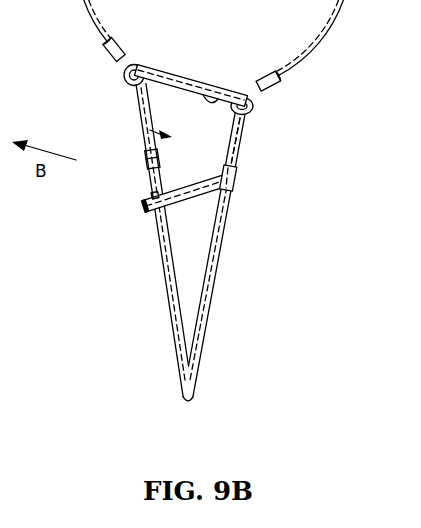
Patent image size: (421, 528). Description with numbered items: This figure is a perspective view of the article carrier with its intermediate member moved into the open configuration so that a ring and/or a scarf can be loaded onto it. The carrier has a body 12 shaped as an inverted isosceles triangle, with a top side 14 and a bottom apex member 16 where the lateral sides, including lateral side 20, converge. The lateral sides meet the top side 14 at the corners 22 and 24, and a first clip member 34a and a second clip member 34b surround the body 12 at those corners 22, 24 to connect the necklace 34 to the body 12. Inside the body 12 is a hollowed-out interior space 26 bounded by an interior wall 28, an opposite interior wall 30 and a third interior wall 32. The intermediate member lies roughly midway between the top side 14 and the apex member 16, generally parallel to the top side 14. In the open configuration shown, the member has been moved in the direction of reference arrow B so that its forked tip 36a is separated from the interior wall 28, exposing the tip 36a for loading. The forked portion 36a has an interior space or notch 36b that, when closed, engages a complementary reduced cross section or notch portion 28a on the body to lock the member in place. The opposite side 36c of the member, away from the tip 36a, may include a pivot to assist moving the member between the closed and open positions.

The body 12 is at (238, 200).
The top side 14 is at (197, 78).
The bottom apex member 16 is at (186, 392).
The lateral side 20 is at (212, 298).
The corner 22 is at (145, 62).
The corner 24 is at (260, 108).
The interior space 26 is at (146, 127).
The interior wall 28 is at (176, 242).
The reduced cross section / notch portion 28a is at (150, 160).
The interior wall 30 is at (216, 242).
The third interior wall 32 is at (222, 100).
The necklace 34 is at (330, 42).
The first clip member 34a is at (108, 56).
The second clip member 34b is at (270, 90).
The tip / forked portion 36a is at (144, 207).
The interior space / notch 36b is at (151, 193).
The opposite side 36c is at (236, 167).